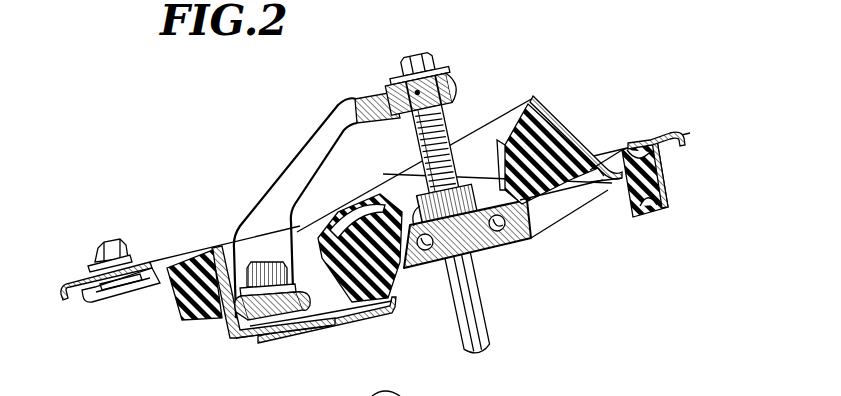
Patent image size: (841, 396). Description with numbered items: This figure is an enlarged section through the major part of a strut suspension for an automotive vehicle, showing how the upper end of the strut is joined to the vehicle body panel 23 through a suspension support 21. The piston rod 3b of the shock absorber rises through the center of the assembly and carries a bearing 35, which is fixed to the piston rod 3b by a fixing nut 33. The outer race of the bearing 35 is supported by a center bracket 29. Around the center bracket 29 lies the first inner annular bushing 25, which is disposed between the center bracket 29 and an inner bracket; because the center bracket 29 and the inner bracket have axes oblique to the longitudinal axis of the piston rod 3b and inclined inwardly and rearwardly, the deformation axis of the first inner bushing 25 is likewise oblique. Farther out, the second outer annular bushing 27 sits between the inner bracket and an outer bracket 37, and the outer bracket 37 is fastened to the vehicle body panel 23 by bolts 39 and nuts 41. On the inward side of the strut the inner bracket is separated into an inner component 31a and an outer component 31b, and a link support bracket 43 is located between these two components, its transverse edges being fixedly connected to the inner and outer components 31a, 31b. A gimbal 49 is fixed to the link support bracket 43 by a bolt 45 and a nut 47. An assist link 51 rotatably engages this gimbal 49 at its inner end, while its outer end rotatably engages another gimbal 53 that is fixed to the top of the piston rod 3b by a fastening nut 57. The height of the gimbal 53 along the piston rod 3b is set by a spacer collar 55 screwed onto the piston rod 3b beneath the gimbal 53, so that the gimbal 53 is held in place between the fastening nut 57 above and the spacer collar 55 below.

The suspension support 21 is at (580, 125).
The vehicle body panel 23 is at (68, 282).
The first inner annular bushing 25 is at (548, 122).
The second outer annular bushing 27 is at (648, 210).
The center bracket 29 is at (383, 196).
The inner component of inner bracket 31a is at (345, 320).
The outer component of inner bracket 31b is at (226, 322).
The fixing nut 33 is at (416, 272).
The bearing 35 is at (455, 252).
The outer bracket 37 is at (172, 306).
The bolts 39 is at (126, 290).
The nuts 41 is at (116, 246).
The link support bracket 43 is at (334, 328).
The bolt 45 is at (286, 338).
The nut 47 is at (258, 262).
The gimbal 49 is at (250, 332).
The assist link 51 is at (312, 140).
The gimbal 53 is at (442, 82).
The spacer collar 55 is at (452, 130).
The fastening nut 57 is at (425, 58).
The piston rod 3b is at (502, 308).